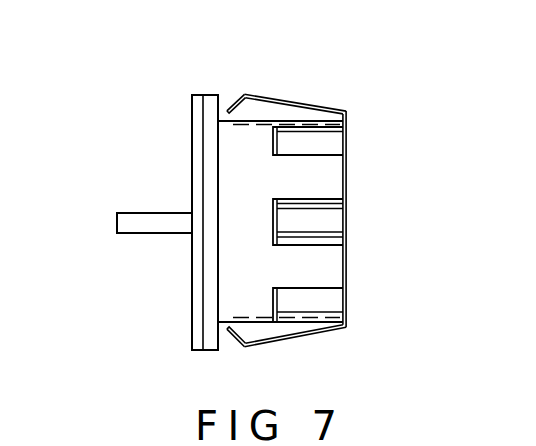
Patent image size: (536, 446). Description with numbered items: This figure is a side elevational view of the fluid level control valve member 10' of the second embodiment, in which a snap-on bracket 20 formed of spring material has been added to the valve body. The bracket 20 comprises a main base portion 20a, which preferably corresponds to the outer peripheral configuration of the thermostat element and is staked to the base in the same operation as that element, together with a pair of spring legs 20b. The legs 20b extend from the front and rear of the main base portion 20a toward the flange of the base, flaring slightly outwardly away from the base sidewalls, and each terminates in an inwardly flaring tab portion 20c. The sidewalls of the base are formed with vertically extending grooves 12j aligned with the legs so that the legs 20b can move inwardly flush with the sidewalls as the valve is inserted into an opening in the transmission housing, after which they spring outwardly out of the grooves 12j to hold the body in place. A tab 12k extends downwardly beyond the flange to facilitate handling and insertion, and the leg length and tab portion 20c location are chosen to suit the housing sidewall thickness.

The connector assembly 10' is at (155, 187).
The vertically extending grooves 12j is at (242, 127).
The tab 12k is at (138, 223).
The snap-on bracket 20 is at (356, 224).
The main base portion 20a is at (347, 172).
The spring legs 20b is at (297, 104).
The tab portion 20c is at (236, 103).